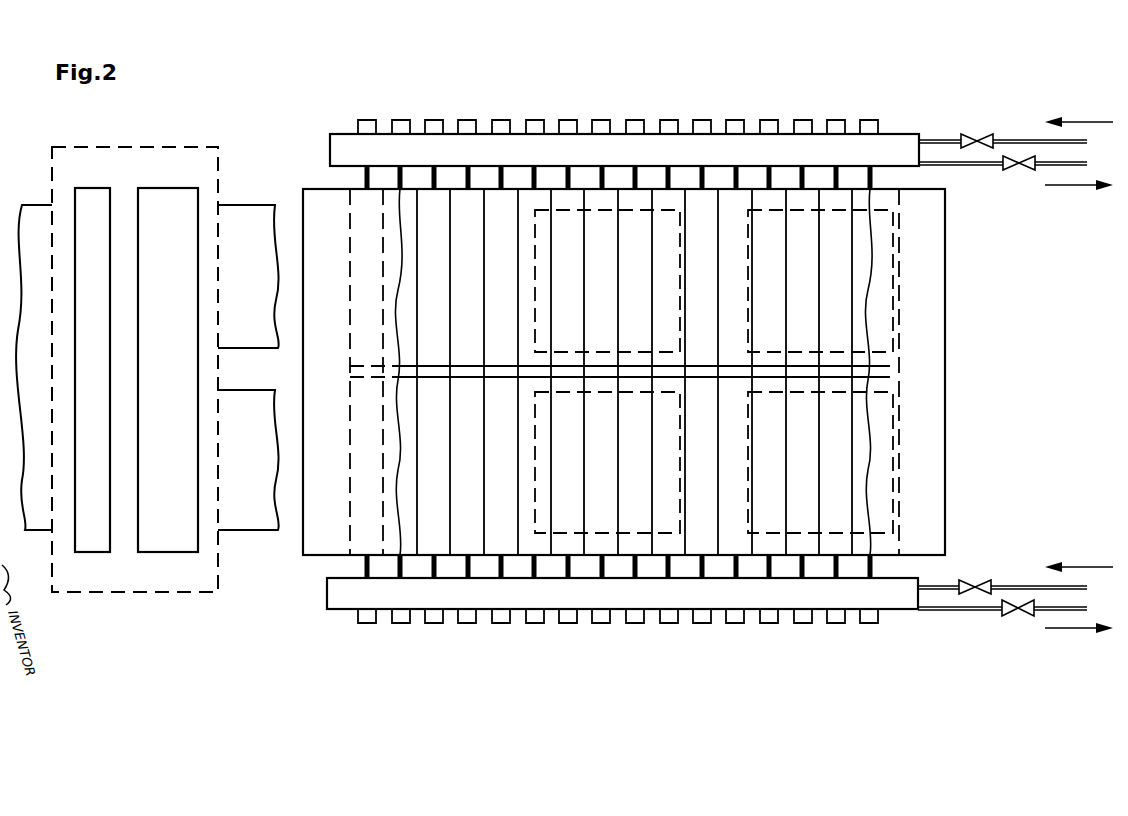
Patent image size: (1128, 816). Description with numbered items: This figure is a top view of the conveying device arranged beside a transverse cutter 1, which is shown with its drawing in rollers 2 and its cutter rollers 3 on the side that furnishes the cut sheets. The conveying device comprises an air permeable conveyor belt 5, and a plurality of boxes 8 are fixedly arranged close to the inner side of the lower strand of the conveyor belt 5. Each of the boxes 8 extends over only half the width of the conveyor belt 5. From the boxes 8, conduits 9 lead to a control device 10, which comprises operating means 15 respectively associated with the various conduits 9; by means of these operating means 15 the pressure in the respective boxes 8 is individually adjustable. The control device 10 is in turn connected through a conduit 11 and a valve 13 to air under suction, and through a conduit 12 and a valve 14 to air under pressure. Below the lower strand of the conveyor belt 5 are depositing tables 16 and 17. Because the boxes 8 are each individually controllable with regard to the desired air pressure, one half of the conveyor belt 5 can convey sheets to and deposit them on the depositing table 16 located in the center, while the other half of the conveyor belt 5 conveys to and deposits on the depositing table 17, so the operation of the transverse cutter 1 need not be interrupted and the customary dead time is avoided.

The transverse cutter 1 is at (118, 592).
The drawing in rollers 2 is at (95, 548).
The cutter rollers 3 is at (185, 548).
The air permeable conveyor belt 5 is at (624, 372).
The boxes 8 is at (634, 372).
The conduits 9 is at (533, 178).
The control device 10 is at (548, 140).
The conduit 11 is at (940, 140).
The conduit 12 is at (986, 165).
The valve 13 is at (975, 136).
The valve 14 is at (1022, 170).
The operating means 15 is at (735, 130).
The depositing table 16 is at (607, 371).
The depositing table 17 is at (820, 371).